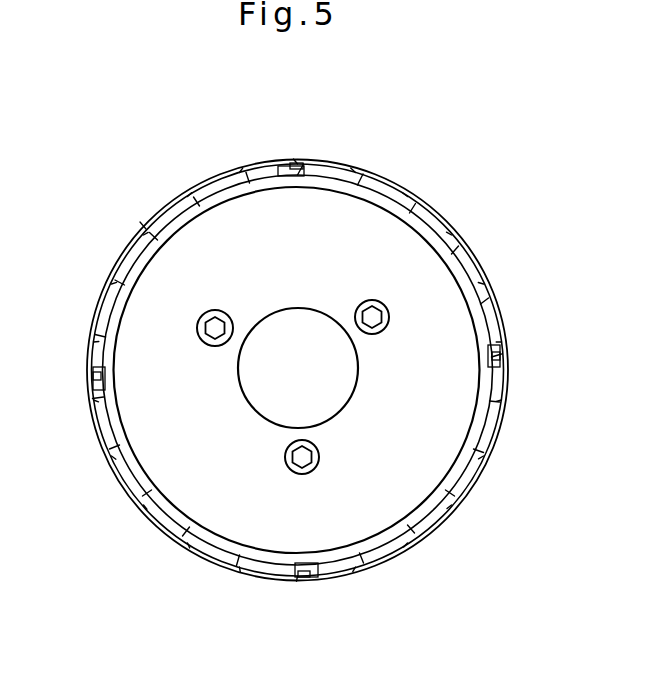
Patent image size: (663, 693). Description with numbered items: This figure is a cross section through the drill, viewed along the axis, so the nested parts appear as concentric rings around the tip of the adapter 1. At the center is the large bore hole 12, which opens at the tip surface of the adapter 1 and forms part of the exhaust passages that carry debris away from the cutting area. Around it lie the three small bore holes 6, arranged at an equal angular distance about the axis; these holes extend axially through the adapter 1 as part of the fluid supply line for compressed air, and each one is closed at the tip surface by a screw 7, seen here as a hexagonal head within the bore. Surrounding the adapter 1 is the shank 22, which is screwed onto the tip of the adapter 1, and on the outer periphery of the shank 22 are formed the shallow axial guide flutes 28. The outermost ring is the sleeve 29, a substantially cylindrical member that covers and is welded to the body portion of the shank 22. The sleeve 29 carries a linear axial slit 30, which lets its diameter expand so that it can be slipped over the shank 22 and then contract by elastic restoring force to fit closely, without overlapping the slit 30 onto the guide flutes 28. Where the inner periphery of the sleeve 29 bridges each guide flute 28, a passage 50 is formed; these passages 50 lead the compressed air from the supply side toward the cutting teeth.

The adapter 1 is at (457, 455).
The small bore holes 6 is at (215, 310).
The screws 7 is at (208, 340).
The large bore hole 12 is at (351, 398).
The shank 22 is at (480, 268).
The guide flutes 28 is at (298, 164).
The sleeve 29 is at (448, 206).
The slit 30 is at (143, 226).
The passage 50 is at (280, 166).